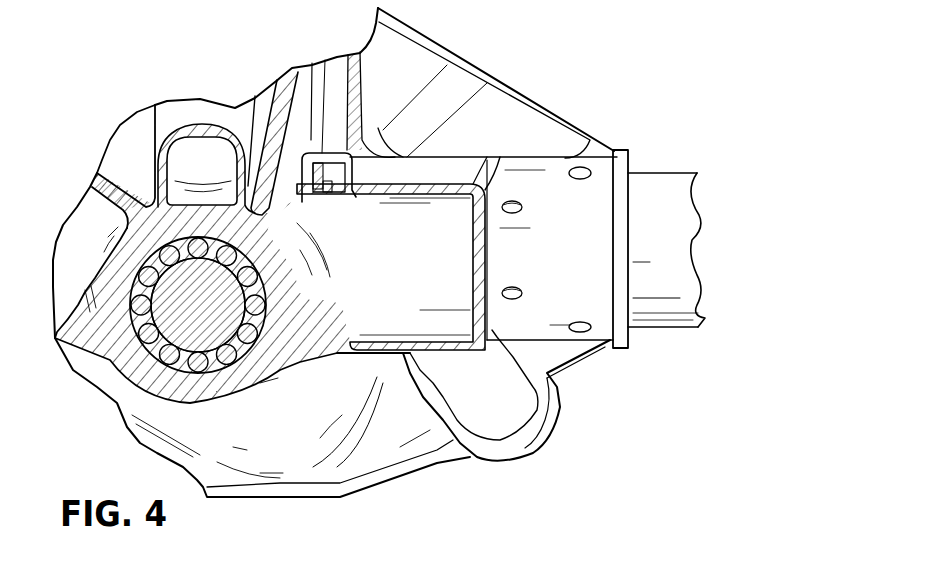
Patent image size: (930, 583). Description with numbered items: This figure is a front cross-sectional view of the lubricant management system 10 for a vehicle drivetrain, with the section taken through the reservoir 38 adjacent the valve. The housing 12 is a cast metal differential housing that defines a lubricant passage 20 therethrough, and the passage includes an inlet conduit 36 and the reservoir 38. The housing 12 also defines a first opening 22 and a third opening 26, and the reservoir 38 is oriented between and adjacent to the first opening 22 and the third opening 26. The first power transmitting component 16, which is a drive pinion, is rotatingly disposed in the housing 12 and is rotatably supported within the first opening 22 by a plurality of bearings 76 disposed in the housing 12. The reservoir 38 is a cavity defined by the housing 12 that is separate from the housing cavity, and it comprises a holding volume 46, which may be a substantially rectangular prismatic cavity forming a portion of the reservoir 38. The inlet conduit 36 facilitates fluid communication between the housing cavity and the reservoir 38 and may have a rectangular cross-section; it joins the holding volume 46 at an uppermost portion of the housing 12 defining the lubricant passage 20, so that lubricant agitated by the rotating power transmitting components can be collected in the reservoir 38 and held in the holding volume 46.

The lubricant management system 10 is at (505, 46).
The housing 12 is at (337, 103).
The first power transmitting component 16 is at (199, 330).
The lubricant passage 20 is at (455, 209).
The first opening 22 is at (257, 340).
The third opening 26 is at (625, 157).
The inlet conduit 36 is at (340, 194).
The reservoir 38 is at (456, 270).
The holding volume 46 is at (450, 237).
The bearings 76 is at (263, 299).